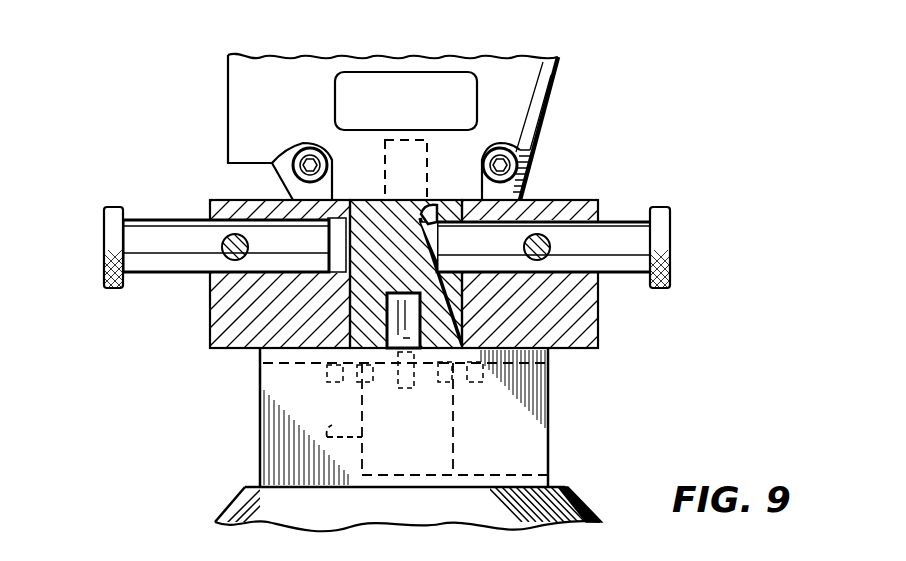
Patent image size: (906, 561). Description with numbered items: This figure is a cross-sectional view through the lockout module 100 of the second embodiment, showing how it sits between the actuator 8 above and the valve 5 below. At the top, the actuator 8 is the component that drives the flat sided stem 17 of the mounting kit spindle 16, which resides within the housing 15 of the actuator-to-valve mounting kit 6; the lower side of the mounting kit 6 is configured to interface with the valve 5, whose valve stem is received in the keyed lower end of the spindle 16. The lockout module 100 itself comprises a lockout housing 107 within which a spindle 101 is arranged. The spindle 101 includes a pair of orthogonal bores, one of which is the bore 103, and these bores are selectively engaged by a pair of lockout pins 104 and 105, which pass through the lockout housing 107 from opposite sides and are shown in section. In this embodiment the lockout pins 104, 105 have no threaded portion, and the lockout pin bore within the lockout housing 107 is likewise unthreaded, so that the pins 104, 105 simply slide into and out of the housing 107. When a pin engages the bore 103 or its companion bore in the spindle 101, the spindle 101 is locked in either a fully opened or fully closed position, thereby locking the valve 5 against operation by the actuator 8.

The valve 5 is at (600, 482).
The actuator-to-valve mounting kit 6 is at (235, 432).
The actuator 8 is at (588, 95).
The housing 15 is at (530, 437).
The spindle 16 is at (339, 424).
The flat sided stem 17 is at (410, 342).
The lockout module 100 is at (646, 177).
The spindle 101 is at (368, 287).
The bore 103 is at (432, 208).
The lockout pin 104 is at (148, 196).
The lockout pin 105 is at (636, 296).
The lockout housing 107 is at (497, 300).